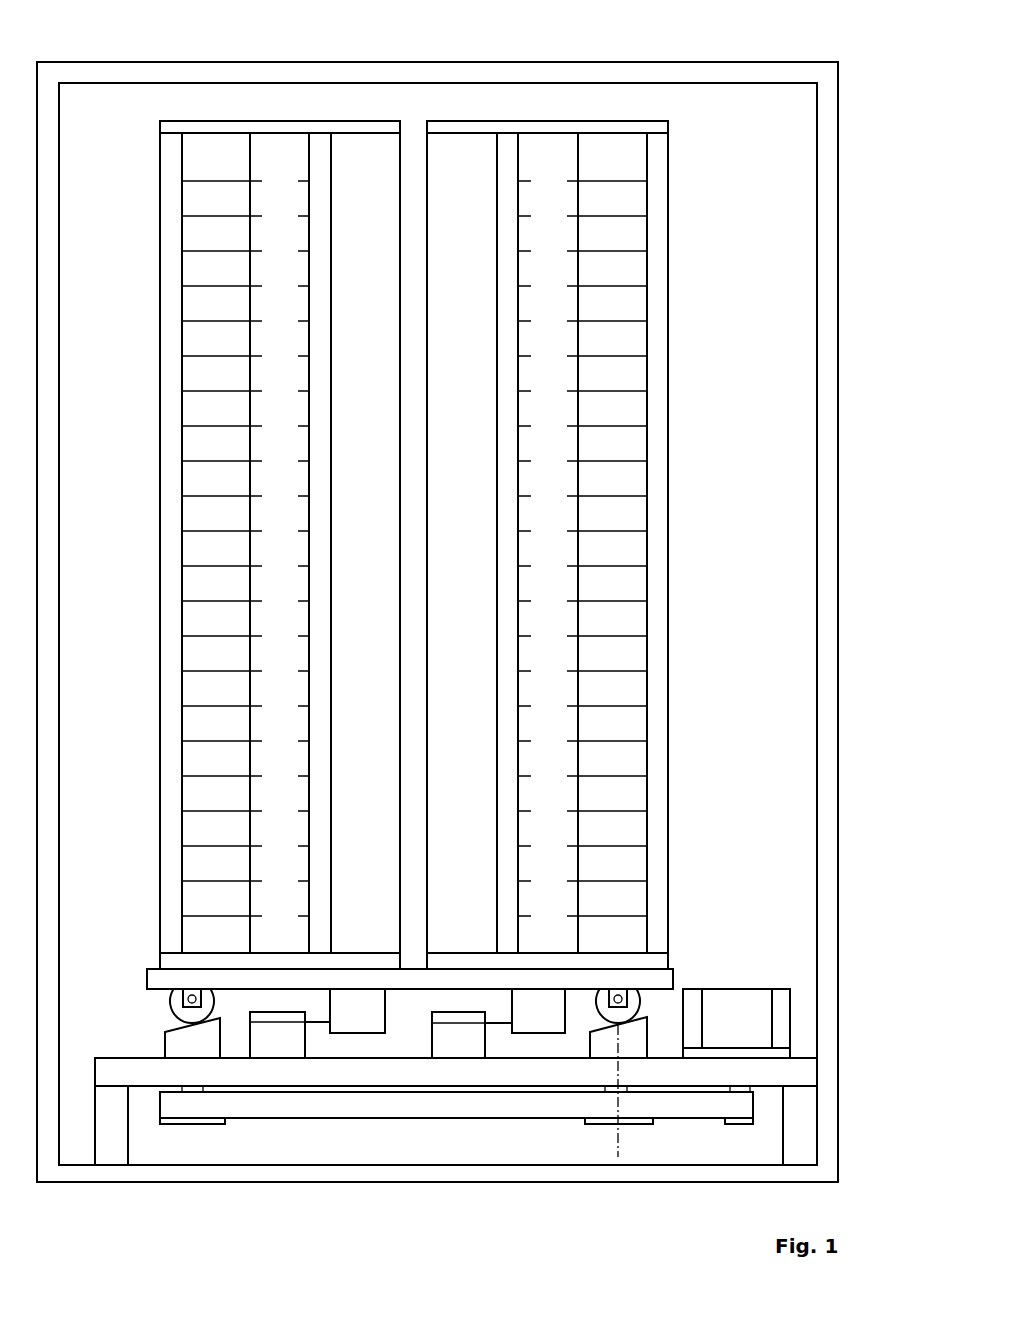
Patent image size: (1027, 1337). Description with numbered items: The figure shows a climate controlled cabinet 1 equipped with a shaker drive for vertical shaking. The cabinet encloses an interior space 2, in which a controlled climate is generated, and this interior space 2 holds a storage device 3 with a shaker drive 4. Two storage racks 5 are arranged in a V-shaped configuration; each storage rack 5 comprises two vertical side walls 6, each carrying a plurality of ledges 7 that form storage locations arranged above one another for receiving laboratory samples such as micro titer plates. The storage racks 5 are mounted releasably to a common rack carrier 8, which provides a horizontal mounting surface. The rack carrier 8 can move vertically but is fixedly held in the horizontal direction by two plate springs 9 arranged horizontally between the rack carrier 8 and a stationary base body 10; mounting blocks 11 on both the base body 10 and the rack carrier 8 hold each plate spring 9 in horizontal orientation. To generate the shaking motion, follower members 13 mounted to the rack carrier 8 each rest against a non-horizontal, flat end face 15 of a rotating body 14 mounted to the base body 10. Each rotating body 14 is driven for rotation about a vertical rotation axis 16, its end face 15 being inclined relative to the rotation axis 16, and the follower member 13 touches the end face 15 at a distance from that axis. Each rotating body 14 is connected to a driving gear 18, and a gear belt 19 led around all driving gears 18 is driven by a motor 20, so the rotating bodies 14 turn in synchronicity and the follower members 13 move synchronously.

The housing 1 is at (728, 70).
The interior space 2 is at (763, 163).
The storage device 3 is at (737, 437).
The shaker drive 4 is at (787, 975).
The storage rack 5 is at (280, 125).
The vertical side wall 6 is at (168, 143).
The ledge 7 is at (302, 250).
The rack carrier 8 is at (147, 973).
The plate spring 9 is at (313, 1023).
The base body 10 is at (145, 1077).
The mounting block 11 is at (283, 1053).
The follower member 13 is at (178, 998).
The rotating body 14 is at (180, 1045).
The end face 15 is at (170, 1027).
The rotation axis 16 is at (620, 1135).
The driving gear 18 is at (177, 1125).
The gear belt 19 is at (302, 1112).
The motor 20 is at (790, 1028).